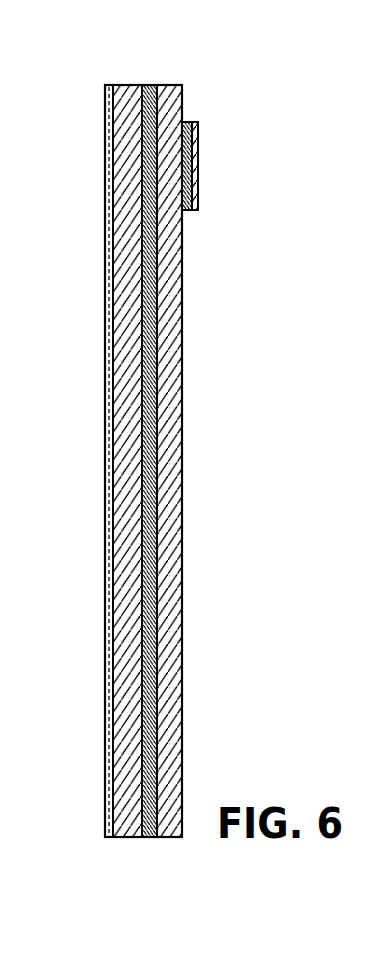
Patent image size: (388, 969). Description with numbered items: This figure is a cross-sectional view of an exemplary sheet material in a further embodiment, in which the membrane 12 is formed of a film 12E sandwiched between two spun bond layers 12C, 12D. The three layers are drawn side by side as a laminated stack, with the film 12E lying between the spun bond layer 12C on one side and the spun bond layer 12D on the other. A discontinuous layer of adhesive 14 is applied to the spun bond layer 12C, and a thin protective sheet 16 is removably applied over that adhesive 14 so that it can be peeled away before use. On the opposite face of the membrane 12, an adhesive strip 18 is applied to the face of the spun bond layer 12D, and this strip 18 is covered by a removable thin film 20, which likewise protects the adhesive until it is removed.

The membrane 12 is at (135, 465).
The spun bond layer 12C is at (135, 839).
The spun bond layer 12D is at (148, 839).
The film 12E is at (168, 839).
The discontinuous layer of adhesive 14 is at (112, 85).
The thin protective sheet 16 is at (107, 85).
The adhesive strip 18 is at (184, 211).
The removable thin film 20 is at (199, 158).